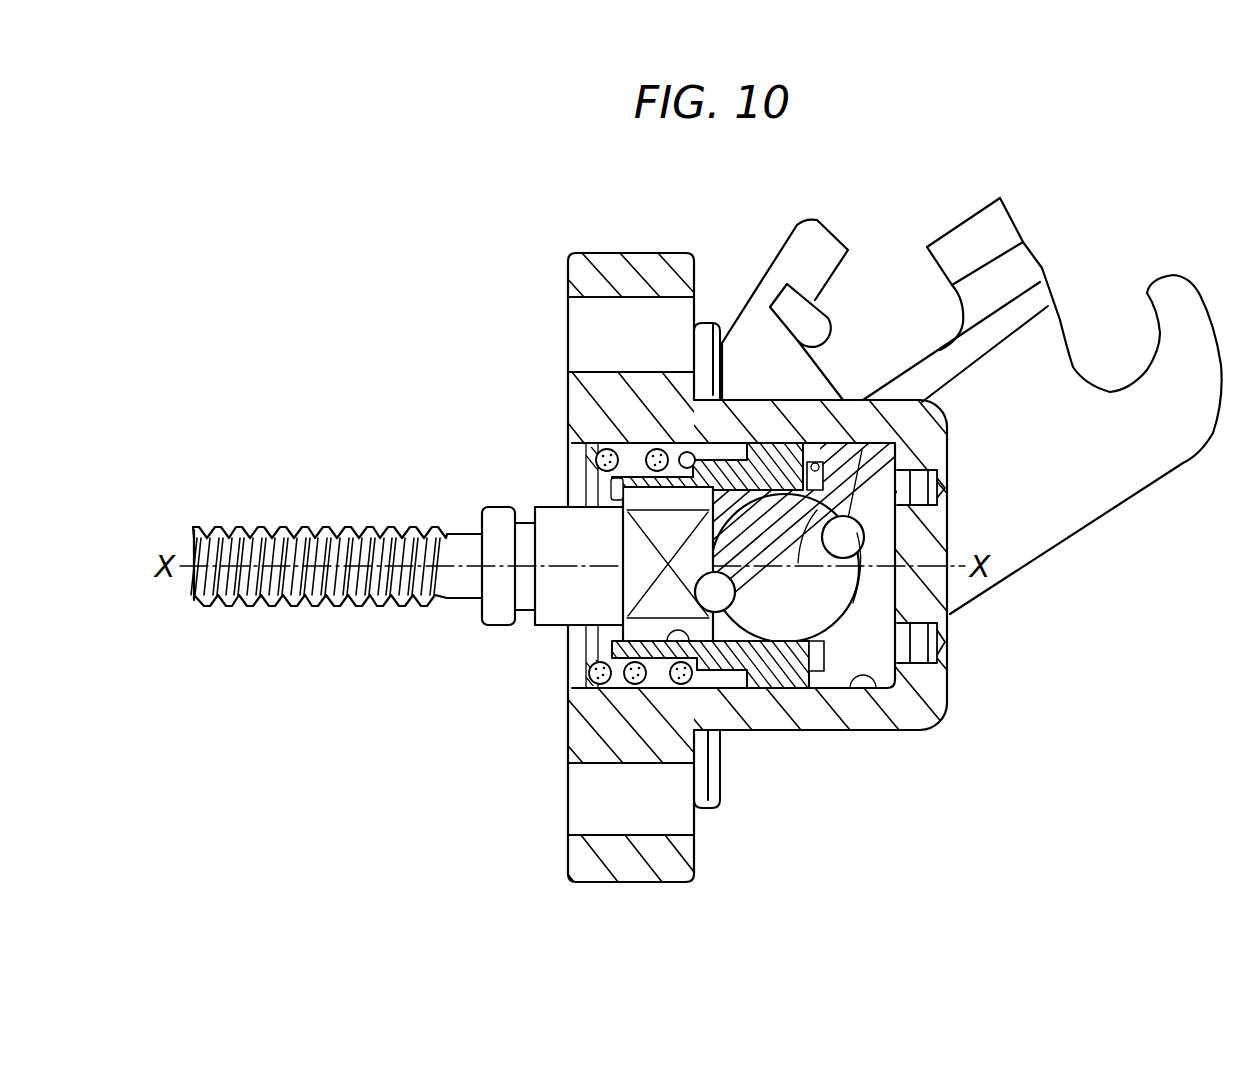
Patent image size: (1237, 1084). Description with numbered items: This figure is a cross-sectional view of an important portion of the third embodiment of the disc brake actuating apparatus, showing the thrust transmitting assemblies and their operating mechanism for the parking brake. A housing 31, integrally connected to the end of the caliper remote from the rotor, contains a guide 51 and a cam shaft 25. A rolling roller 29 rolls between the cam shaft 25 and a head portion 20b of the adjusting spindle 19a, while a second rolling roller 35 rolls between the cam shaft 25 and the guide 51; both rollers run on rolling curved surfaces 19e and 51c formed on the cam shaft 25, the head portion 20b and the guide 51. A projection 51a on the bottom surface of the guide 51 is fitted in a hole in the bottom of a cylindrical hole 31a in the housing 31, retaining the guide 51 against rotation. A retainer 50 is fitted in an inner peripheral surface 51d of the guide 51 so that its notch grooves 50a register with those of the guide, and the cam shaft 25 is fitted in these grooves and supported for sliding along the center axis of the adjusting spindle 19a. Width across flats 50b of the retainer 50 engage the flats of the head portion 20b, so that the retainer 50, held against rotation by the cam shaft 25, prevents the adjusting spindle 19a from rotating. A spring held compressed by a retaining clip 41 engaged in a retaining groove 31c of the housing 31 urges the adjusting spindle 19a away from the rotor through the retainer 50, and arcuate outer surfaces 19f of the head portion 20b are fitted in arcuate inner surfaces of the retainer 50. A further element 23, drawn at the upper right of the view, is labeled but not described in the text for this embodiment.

The adjusting spindle 19a is at (307, 590).
The rolling curved surface 19e is at (700, 572).
The arcuate outer surfaces 19f is at (662, 655).
The head portion 20b is at (667, 525).
The hook lever 23 is at (1167, 452).
The cam shaft 25 is at (818, 602).
The rolling roller 29 is at (713, 594).
The housing 31 is at (923, 717).
The cylindrical hole 31a is at (865, 700).
The retaining groove 31c is at (600, 692).
The rolling roller 35 is at (947, 421).
The retaining clip 41 is at (600, 688).
The retainer 50 is at (633, 382).
The notch grooves 50a is at (770, 672).
The width across flats 50b is at (727, 665).
The guide 51 is at (1000, 320).
The projection 51a is at (940, 497).
The rolling curved surface 51c is at (843, 603).
The inner peripheral surface 51d is at (815, 462).